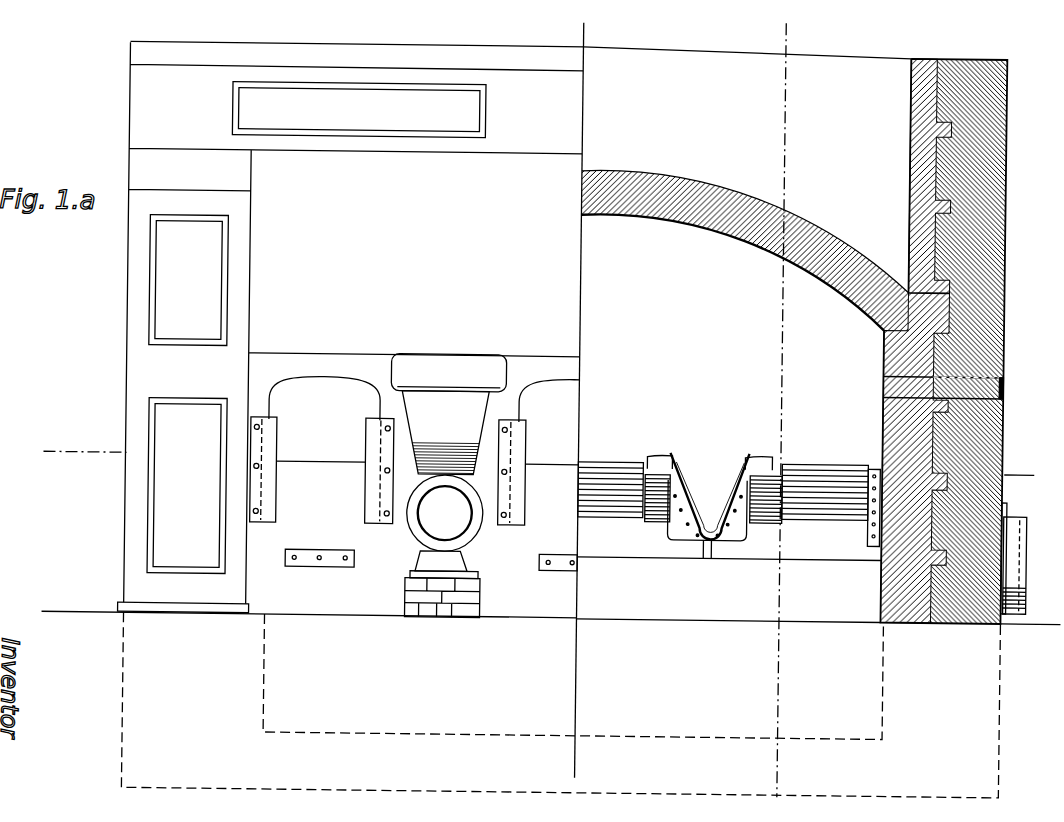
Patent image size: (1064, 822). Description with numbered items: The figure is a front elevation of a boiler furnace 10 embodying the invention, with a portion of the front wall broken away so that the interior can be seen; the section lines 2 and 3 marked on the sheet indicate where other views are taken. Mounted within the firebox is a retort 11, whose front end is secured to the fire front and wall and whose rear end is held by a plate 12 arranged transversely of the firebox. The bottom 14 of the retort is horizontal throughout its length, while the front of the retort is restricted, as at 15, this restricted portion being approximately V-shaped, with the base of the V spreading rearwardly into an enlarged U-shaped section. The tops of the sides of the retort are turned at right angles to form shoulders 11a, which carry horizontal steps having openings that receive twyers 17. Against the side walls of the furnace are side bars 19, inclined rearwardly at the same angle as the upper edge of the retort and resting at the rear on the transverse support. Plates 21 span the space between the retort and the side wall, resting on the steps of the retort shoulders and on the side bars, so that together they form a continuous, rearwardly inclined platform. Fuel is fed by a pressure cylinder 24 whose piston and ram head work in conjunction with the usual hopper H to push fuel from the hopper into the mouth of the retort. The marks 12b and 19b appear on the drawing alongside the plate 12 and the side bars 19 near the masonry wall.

The section line 2- 2 is at (776, 40).
The section line 3- 3 is at (75, 440).
The boiler furnace 10 is at (551, 419).
The hopper H is at (448, 414).
The pressure cylinder 24 is at (444, 546).
The retort 11 is at (739, 533).
The shoulder 11a is at (765, 511).
The plate 12 is at (808, 548).
The masonry wall 12b is at (791, 339).
The bottom of the retort 14 is at (703, 539).
The restricted portion 15 is at (708, 531).
The twyer 17 is at (661, 455).
The side bar 19 is at (861, 507).
The bracket 19b is at (870, 544).
The plate 21 is at (613, 464).